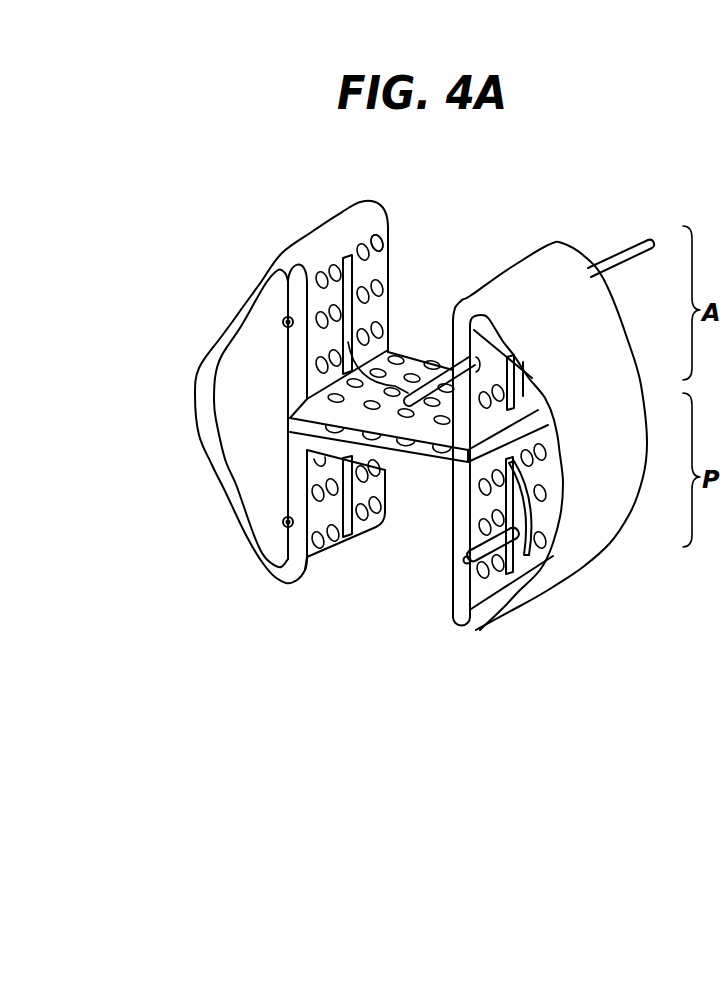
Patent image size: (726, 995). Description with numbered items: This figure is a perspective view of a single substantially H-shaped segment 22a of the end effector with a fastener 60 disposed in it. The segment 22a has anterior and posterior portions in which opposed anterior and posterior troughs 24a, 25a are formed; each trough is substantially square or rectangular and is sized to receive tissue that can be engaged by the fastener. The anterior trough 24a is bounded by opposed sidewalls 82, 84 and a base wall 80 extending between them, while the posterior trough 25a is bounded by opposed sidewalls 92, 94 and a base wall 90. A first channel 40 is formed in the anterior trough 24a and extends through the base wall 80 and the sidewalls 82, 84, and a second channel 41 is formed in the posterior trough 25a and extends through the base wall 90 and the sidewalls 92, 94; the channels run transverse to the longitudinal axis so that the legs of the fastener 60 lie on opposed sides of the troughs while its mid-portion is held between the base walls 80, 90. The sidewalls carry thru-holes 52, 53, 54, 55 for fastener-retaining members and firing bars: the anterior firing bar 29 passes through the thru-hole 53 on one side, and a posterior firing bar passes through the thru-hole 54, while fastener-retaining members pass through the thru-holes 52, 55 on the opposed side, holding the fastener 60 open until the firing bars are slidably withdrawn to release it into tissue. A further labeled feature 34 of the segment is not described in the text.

The segment 22a is at (212, 236).
The anterior trough 24a is at (476, 241).
The posterior trough 25a is at (380, 576).
The anterior firing bar 29 is at (634, 245).
The vertical wall 34 is at (350, 300).
The first channel 40 is at (350, 290).
The second channel 41 is at (343, 473).
The thru-hole 52 is at (283, 321).
The thru-hole 53 is at (462, 362).
The thru-hole 54 is at (469, 564).
The thru-hole 55 is at (284, 525).
The fastener 60 is at (527, 515).
The base wall 80 is at (320, 402).
The sidewall 82 is at (377, 218).
The sidewall 84 is at (519, 258).
The base wall 90 is at (415, 473).
The sidewall 92 is at (312, 562).
The sidewall 94 is at (460, 555).